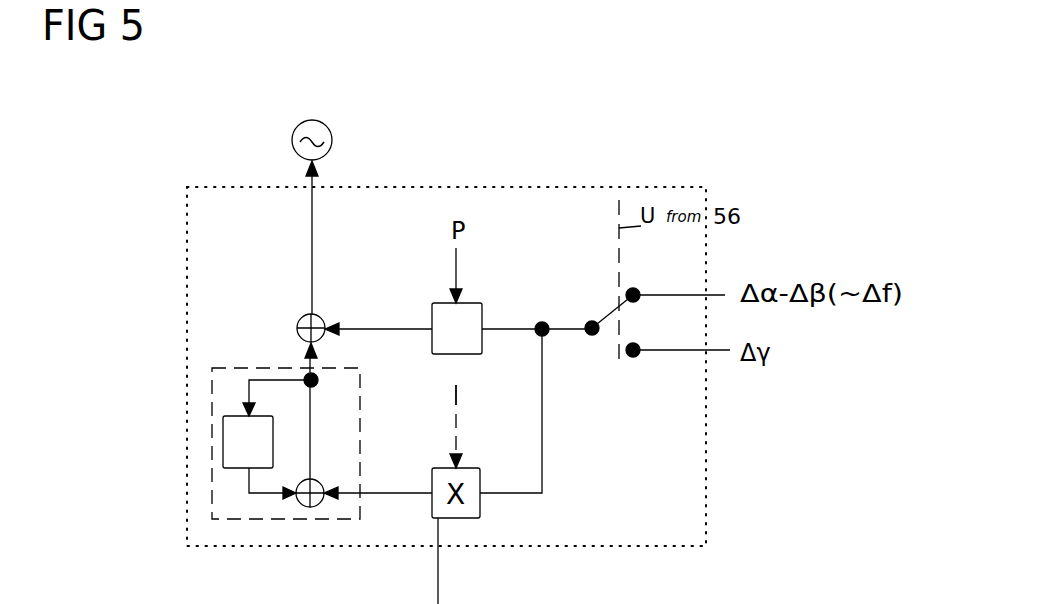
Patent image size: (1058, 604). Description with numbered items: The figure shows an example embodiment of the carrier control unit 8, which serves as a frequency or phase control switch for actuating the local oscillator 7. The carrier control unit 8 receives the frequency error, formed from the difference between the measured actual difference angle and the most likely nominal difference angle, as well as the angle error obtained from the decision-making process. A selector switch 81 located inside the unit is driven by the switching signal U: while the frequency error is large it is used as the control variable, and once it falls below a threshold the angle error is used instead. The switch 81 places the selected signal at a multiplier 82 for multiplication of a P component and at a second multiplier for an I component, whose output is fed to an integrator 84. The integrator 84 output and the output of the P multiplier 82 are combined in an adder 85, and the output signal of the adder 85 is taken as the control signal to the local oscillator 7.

The local oscillator 7 is at (292, 139).
The carrier control unit 8 is at (637, 190).
The selector switch 81 is at (592, 321).
The multiplier 82 is at (442, 303).
The integrator 84 is at (212, 398).
The adder 85 is at (298, 317).